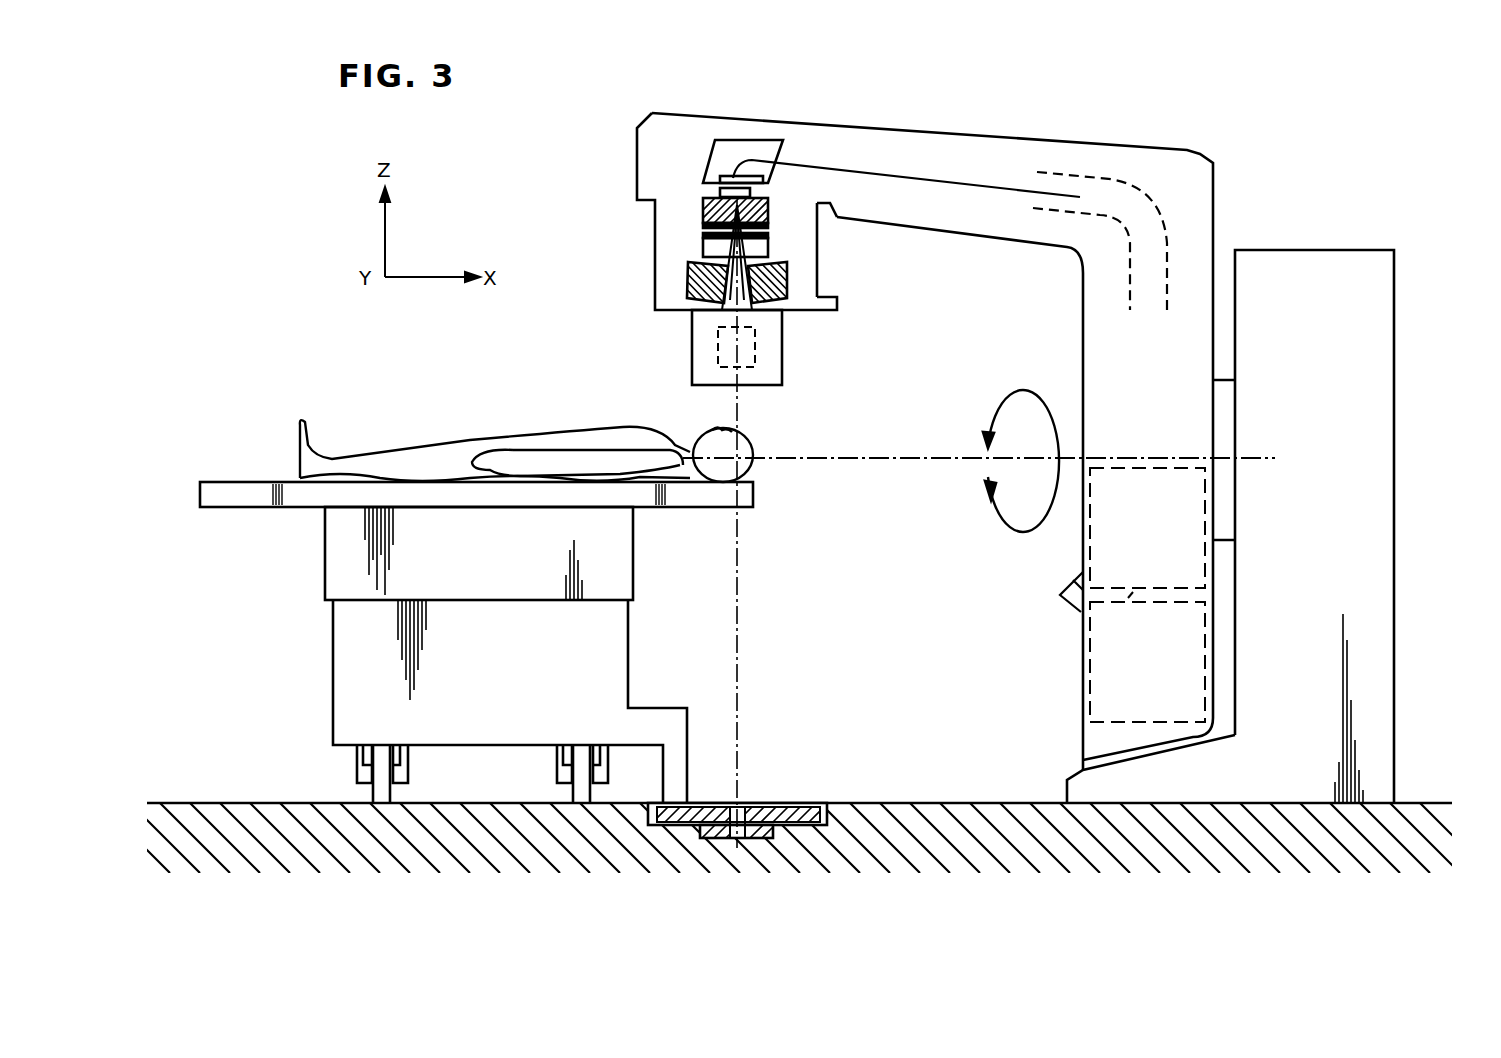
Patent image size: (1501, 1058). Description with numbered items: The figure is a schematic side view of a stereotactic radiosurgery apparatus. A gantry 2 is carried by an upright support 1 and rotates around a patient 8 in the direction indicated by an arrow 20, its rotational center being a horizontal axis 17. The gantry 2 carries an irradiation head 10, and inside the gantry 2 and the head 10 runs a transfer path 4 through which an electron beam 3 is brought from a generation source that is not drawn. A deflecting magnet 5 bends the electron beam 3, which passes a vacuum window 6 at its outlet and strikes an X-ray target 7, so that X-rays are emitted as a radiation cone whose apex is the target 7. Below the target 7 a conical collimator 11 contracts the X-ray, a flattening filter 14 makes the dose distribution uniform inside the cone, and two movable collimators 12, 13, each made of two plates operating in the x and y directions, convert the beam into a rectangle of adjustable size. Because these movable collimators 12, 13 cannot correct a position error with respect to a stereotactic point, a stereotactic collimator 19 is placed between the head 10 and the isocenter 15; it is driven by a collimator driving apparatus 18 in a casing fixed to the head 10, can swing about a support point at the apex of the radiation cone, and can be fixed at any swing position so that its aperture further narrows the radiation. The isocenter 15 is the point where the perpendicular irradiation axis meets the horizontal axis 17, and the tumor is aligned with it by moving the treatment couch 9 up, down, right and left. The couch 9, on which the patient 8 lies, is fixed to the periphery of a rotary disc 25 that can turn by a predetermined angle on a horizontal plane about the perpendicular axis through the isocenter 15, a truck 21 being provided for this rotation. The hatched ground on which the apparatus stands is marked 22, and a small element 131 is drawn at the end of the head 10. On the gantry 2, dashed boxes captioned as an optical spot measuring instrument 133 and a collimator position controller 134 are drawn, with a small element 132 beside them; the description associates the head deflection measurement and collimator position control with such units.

The support 1 is at (1340, 250).
The gantry 2 is at (1215, 200).
The electron beam 3 is at (908, 175).
The transfer path 4 is at (1157, 207).
The deflecting magnet 5 is at (782, 150).
The vacuum window 6 is at (718, 178).
The X-ray target 7 is at (720, 193).
The patient 8 is at (420, 450).
The treatment couch 9 is at (233, 482).
The irradiation head 10 is at (655, 253).
The conical collimator 11 is at (770, 205).
The movable collimator 12 is at (770, 250).
The movable collimator 13 is at (787, 275).
The filter 14 is at (703, 232).
The isocenter 15 is at (752, 442).
The horizontal axis 17 is at (830, 457).
The collimator driving apparatus 18 is at (782, 347).
The stereotactic collimator 19 is at (718, 347).
The arrow 20 is at (1020, 388).
The truck 21 is at (382, 760).
The floor 22 is at (950, 803).
The rotary disc 25 is at (783, 803).
The head housing flange 131 is at (840, 300).
The light projector 132 is at (1072, 608).
The optical spot measuring instrument 133 is at (1090, 555).
The collimator position controller 134 is at (1090, 693).